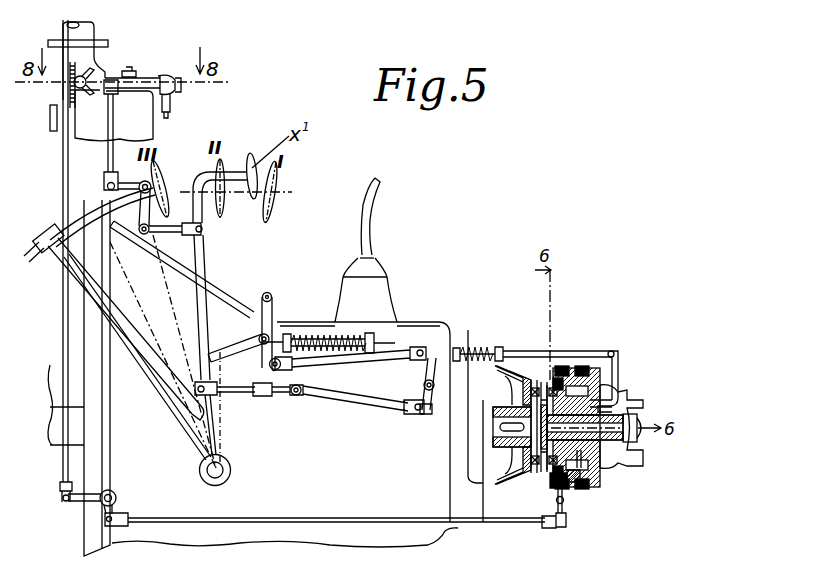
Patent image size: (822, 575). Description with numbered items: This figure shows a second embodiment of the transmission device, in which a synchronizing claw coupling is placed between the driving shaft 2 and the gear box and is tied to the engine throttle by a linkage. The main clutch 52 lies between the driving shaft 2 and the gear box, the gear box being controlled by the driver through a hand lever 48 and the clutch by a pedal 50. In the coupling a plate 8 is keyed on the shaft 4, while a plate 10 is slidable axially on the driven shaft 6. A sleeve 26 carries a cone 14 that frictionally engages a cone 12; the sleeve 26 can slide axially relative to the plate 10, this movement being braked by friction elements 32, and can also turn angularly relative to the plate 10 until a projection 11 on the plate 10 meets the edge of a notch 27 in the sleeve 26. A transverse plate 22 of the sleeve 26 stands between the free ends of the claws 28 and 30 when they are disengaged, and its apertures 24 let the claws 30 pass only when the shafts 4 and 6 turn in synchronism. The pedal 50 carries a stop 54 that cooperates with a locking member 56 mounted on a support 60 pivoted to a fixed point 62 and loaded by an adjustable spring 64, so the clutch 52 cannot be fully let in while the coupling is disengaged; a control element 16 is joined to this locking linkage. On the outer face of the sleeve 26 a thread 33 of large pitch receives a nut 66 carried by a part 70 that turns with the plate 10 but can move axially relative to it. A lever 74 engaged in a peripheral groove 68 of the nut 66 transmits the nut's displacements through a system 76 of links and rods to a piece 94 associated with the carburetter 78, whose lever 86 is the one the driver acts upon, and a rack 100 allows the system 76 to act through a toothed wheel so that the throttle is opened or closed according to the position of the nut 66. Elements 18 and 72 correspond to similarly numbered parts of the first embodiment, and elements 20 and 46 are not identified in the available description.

The driving shaft 2 is at (50, 395).
The shaft 4 is at (500, 433).
The driven shaft 6 is at (600, 450).
The plate 8 is at (507, 367).
The plate 10 is at (600, 403).
The projection 11 is at (572, 386).
The cone 12 is at (485, 480).
The cone 14 is at (512, 480).
The control element 16 is at (531, 351).
The element 18 is at (308, 398).
The spring 20 is at (482, 347).
The transverse plate 22 is at (514, 458).
The apertures 24 is at (530, 478).
The sleeve 26 is at (555, 485).
The notch 27 is at (582, 396).
The claws 28 is at (540, 386).
The claws 30 is at (550, 478).
The friction elements 32 is at (567, 472).
The thread 33 is at (567, 482).
The ground line 46 is at (342, 534).
The hand lever 48 is at (366, 218).
The pedal 50 is at (139, 392).
The main clutch 52 is at (132, 332).
The stop 54 is at (222, 345).
The locking member 56 is at (229, 304).
The support 60 is at (264, 314).
The fixed point 62 is at (268, 292).
The spring 64 is at (314, 335).
The nut 66 is at (577, 473).
The peripheral groove 68 is at (562, 373).
The part 70 is at (592, 400).
The element 72 is at (582, 465).
The lever 74 is at (563, 527).
The system of links and rods 76 is at (340, 518).
The carburetter 78 is at (141, 80).
The lever 86 is at (108, 80).
The piece 94 is at (84, 76).
The rack 100 is at (68, 127).